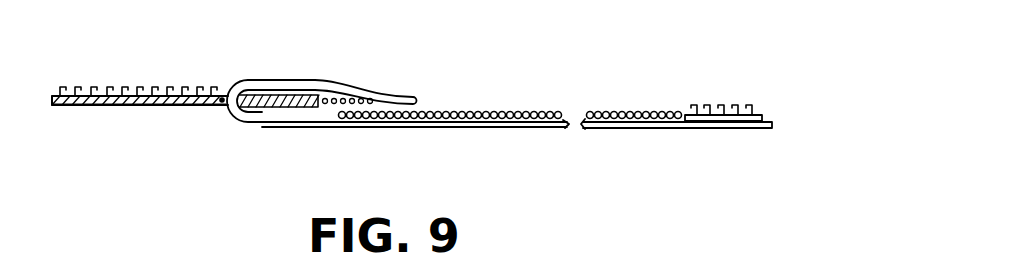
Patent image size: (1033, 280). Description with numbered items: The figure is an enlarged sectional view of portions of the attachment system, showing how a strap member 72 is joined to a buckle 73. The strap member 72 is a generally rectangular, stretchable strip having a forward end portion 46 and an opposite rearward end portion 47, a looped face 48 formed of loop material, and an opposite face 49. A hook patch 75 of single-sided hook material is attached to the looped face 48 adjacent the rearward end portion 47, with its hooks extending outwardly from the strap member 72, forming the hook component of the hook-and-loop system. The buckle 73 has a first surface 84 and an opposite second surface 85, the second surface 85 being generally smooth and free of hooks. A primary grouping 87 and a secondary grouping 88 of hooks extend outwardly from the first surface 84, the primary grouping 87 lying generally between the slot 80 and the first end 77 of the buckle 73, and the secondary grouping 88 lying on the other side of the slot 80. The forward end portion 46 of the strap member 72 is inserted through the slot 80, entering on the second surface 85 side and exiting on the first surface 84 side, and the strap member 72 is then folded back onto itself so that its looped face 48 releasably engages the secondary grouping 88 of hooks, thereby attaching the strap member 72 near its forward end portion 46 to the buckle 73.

The forward end portion 46 is at (367, 87).
The rearward end portion 47 is at (730, 130).
The looped face 48 is at (480, 110).
The opposite face 49 is at (627, 129).
The strap member 72 is at (450, 128).
The buckle 73 is at (76, 107).
The hook patch 75 is at (762, 108).
The first end 77 is at (50, 100).
The slot 80 is at (222, 98).
The first surface 84 is at (124, 93).
The second surface 85 is at (148, 106).
The primary grouping of hooks 87 is at (160, 84).
The secondary grouping of hooks 88 is at (298, 93).